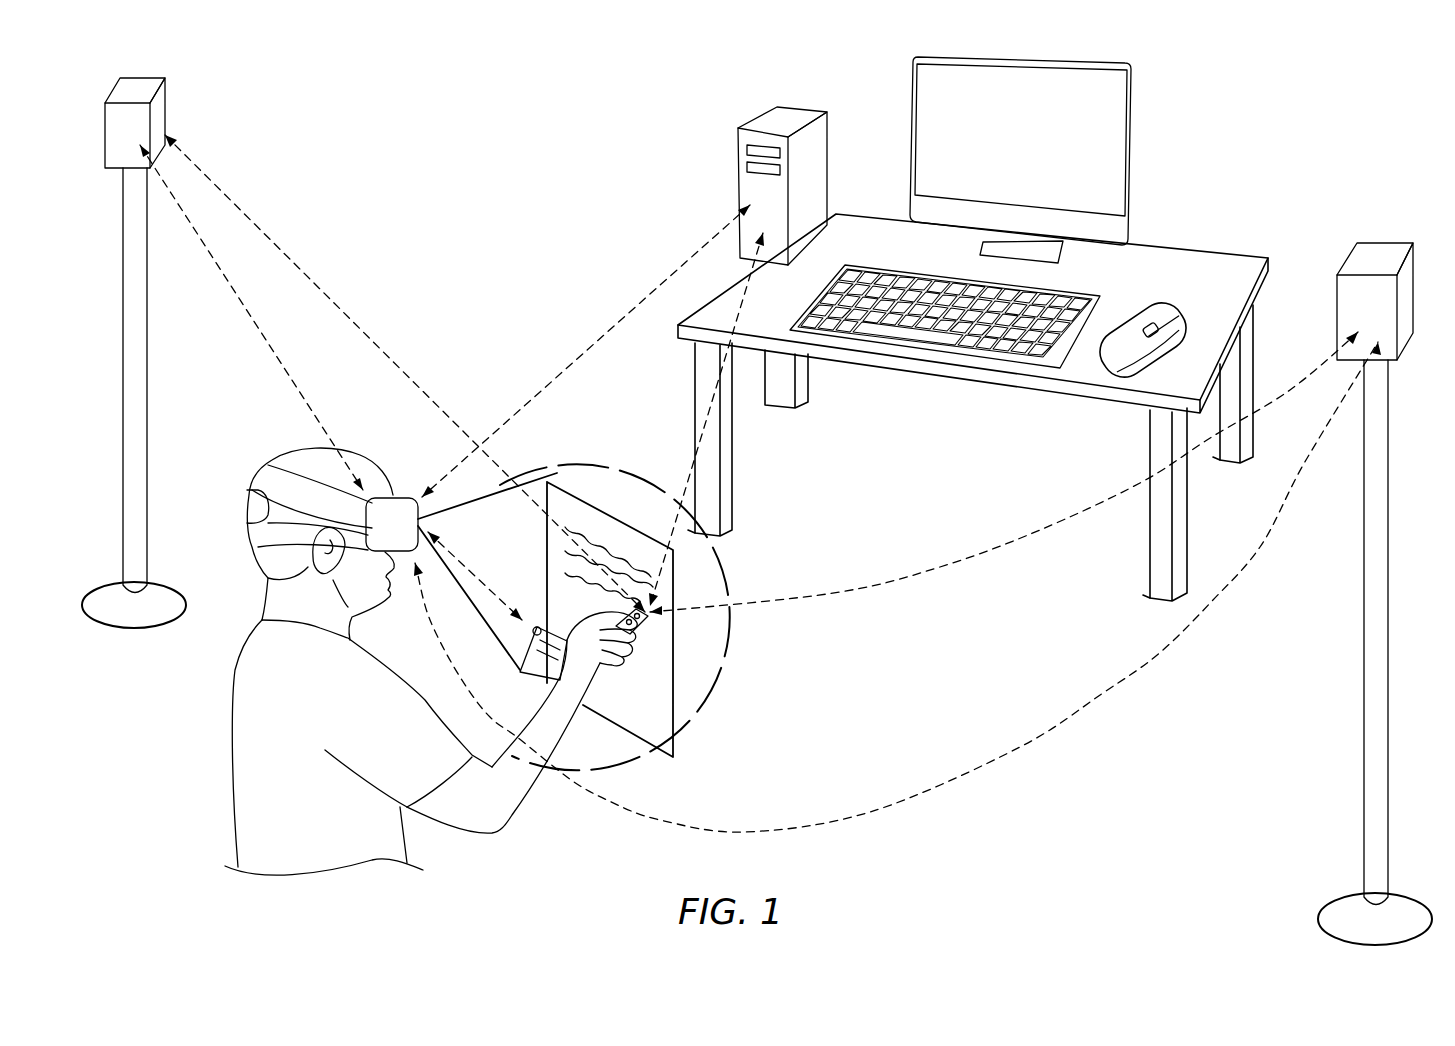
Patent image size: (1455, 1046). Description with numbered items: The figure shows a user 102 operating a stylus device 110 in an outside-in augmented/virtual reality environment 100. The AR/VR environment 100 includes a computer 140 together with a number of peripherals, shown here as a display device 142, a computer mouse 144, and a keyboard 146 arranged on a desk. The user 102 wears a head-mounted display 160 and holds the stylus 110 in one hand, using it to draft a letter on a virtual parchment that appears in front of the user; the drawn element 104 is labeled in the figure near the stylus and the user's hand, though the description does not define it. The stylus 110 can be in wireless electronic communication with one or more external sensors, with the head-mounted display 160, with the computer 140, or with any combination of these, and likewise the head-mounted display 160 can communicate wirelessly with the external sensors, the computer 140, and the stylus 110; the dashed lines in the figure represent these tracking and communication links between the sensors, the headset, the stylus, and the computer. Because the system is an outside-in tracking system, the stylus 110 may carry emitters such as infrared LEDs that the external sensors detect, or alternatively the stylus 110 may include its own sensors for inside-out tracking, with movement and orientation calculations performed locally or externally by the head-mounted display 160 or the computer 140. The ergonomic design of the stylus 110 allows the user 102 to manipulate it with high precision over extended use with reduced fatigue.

The AR/VR environment 100 is at (1350, 111).
The user 102 is at (233, 720).
The hand-held controller 104 is at (597, 660).
The stylus device 110 is at (643, 617).
The computer 140 is at (768, 122).
The display device 142 is at (1132, 125).
The computer mouse 144 is at (1172, 316).
The keyboard 146 is at (1082, 292).
The head-mounted display 160 is at (383, 525).